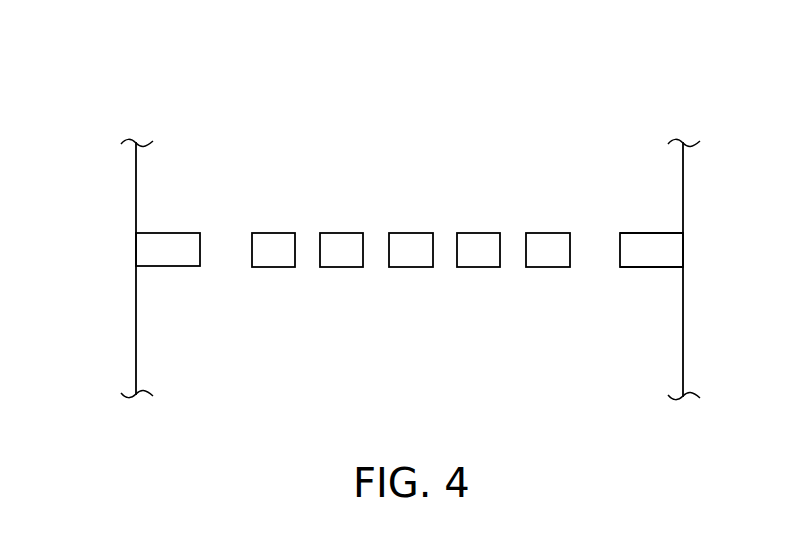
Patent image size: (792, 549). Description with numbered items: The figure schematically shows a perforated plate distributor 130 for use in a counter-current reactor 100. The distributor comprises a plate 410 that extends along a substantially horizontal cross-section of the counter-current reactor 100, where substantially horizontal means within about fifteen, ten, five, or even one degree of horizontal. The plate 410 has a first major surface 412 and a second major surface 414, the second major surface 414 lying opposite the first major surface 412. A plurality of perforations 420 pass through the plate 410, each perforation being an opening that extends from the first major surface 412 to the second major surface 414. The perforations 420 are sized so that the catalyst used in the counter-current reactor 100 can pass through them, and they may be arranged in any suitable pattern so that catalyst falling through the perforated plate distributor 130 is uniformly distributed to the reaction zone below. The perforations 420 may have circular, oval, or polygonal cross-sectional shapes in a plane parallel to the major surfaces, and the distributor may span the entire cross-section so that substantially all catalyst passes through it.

The counter-current reactor 100 is at (714, 101).
The perforated plate distributor 130 is at (480, 206).
The perforations 420 is at (371, 231).
The plate 410 is at (684, 255).
The first major surface 412 is at (662, 233).
The second major surface 414 is at (662, 267).